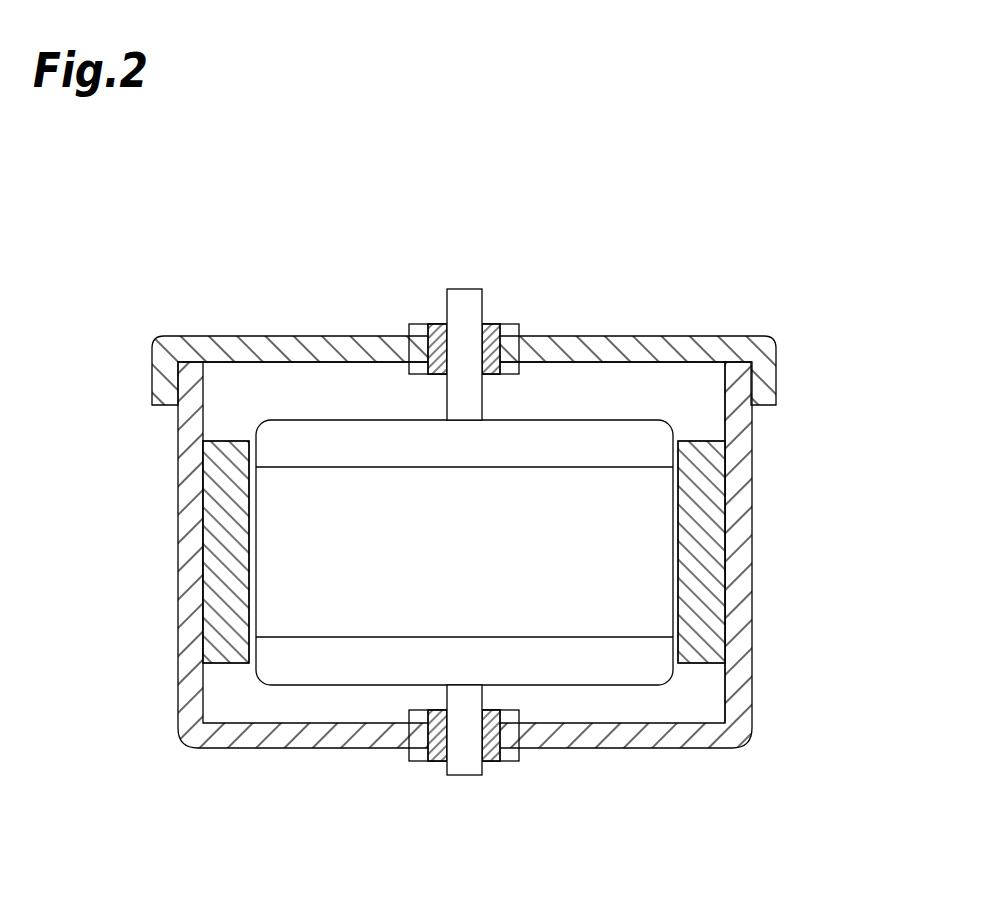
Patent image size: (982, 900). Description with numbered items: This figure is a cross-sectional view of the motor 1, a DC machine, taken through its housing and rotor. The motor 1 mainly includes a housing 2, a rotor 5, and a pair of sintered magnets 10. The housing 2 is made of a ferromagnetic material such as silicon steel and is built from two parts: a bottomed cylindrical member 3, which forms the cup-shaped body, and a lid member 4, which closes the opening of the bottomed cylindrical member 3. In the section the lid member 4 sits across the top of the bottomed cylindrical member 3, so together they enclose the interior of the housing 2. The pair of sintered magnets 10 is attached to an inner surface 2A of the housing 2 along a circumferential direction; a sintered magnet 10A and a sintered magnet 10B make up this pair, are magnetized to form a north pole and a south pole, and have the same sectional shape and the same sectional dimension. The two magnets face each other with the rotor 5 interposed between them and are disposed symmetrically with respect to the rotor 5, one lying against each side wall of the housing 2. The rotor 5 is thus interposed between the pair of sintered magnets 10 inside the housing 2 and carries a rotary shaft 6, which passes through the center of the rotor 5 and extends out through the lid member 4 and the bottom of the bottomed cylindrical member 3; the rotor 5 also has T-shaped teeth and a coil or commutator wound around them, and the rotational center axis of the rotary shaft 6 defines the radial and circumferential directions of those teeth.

The motor 1 is at (200, 275).
The housing 2 is at (817, 264).
The bottomed cylindrical member 3 is at (753, 447).
The lid member 4 is at (700, 336).
The inner surface 2A is at (722, 501).
The rotor 5 is at (567, 412).
The rotary shaft 6 is at (446, 303).
The pair of sintered magnets 10 is at (459, 552).
The sintered magnet 10A is at (705, 608).
The sintered magnet 10B is at (218, 603).